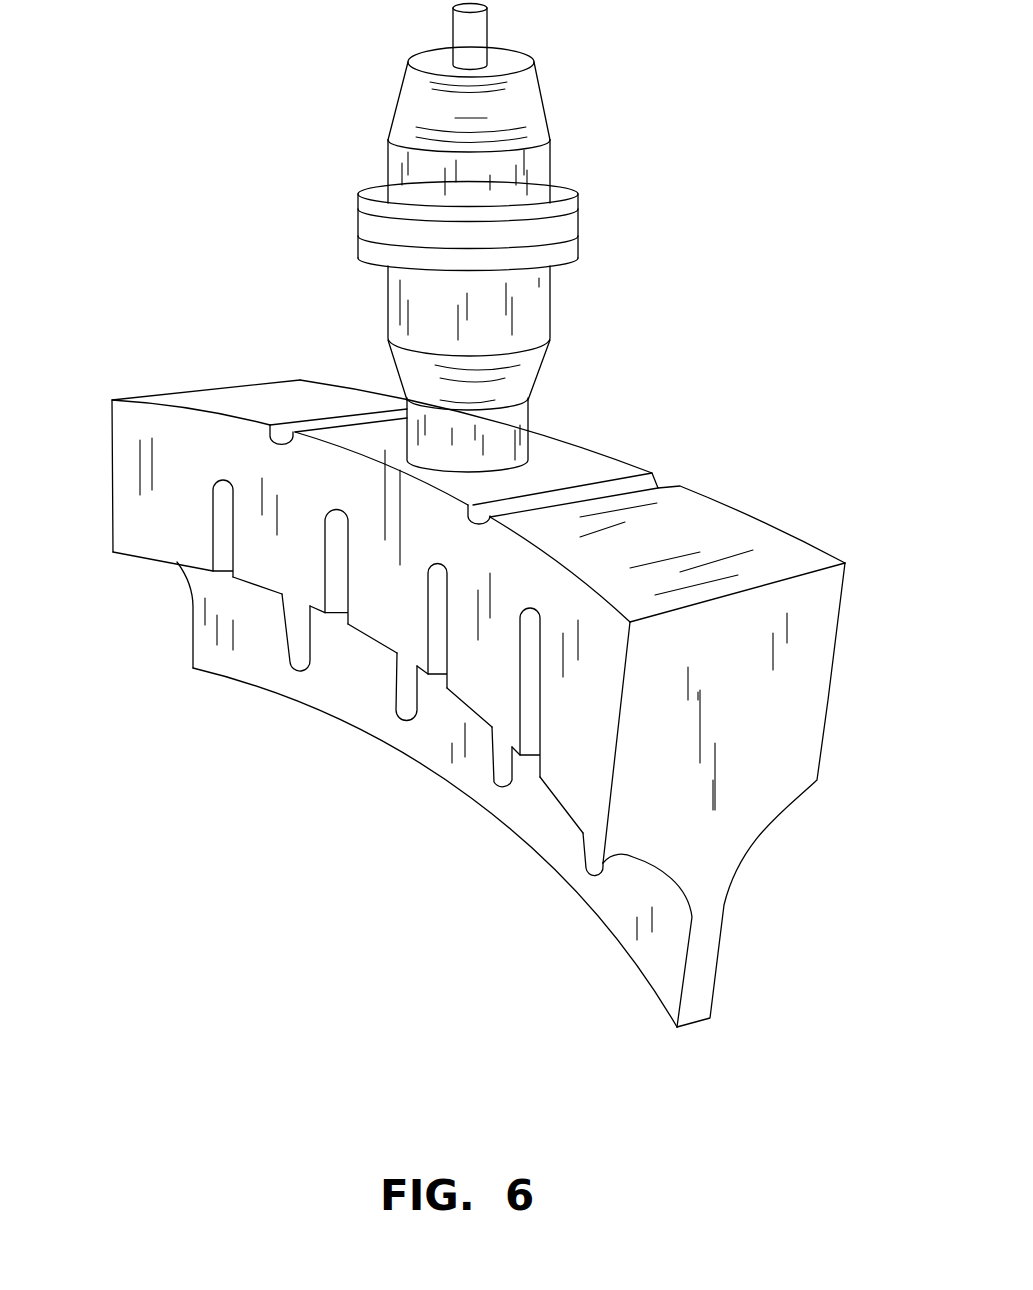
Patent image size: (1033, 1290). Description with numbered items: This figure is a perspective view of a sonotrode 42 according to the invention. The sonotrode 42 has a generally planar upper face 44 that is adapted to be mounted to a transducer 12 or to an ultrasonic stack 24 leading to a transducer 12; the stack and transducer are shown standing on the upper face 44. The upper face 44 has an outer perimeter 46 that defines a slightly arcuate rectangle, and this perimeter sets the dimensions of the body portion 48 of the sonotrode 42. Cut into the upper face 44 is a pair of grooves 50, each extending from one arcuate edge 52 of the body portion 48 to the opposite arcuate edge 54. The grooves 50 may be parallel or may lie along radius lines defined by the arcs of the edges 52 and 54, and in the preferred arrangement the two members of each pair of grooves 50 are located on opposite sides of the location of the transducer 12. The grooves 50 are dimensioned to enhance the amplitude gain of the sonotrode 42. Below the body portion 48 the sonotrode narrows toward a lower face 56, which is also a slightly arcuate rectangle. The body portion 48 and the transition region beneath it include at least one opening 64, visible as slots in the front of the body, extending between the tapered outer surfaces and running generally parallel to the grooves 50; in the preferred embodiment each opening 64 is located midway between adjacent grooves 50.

The transducer 12 is at (537, 158).
The ultrasonic stack 24 is at (525, 302).
The sonotrode 42 is at (482, 649).
The upper face 44 is at (582, 465).
The outer perimeter 46 is at (723, 503).
The body portion 48 is at (783, 688).
The grooves 50 is at (285, 432).
The arcuate edge 52 is at (200, 408).
The opposite arcuate edge 54 is at (780, 530).
The lower face 56 is at (693, 1024).
The opening 64 is at (217, 537).